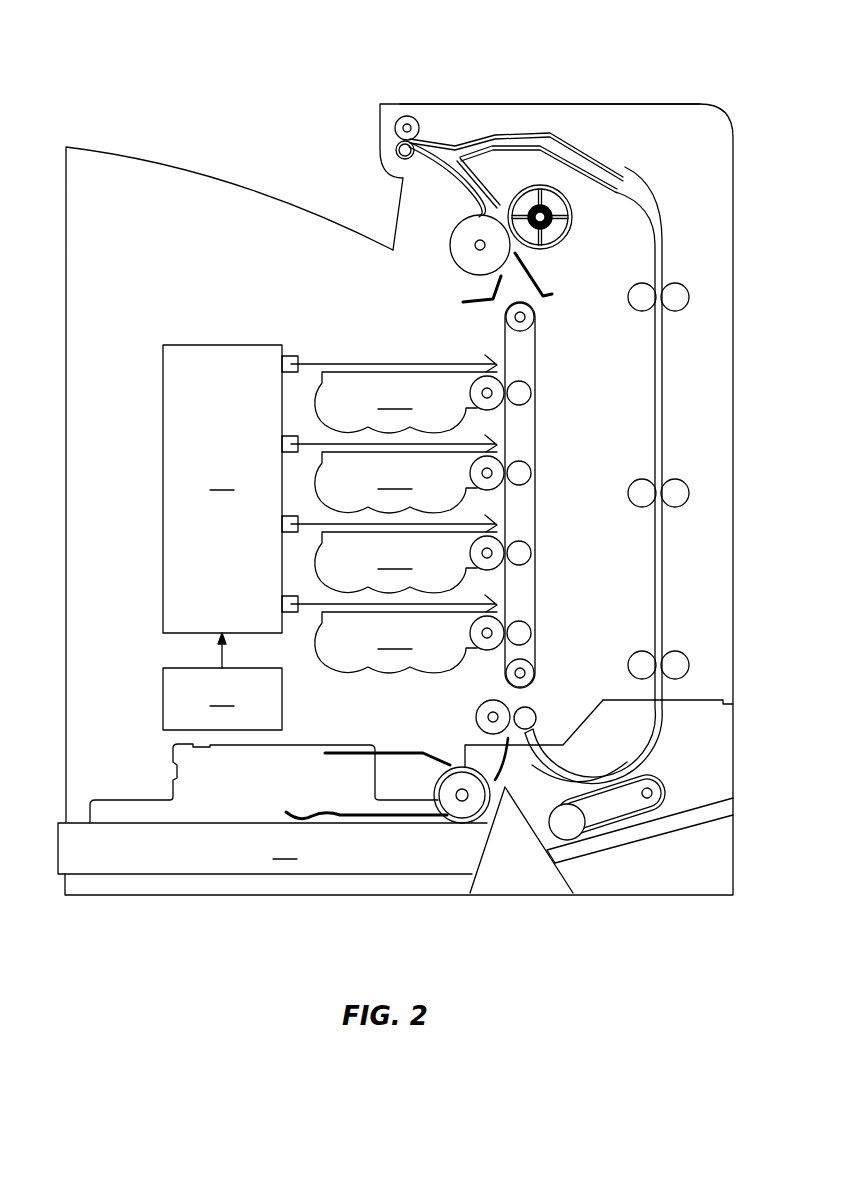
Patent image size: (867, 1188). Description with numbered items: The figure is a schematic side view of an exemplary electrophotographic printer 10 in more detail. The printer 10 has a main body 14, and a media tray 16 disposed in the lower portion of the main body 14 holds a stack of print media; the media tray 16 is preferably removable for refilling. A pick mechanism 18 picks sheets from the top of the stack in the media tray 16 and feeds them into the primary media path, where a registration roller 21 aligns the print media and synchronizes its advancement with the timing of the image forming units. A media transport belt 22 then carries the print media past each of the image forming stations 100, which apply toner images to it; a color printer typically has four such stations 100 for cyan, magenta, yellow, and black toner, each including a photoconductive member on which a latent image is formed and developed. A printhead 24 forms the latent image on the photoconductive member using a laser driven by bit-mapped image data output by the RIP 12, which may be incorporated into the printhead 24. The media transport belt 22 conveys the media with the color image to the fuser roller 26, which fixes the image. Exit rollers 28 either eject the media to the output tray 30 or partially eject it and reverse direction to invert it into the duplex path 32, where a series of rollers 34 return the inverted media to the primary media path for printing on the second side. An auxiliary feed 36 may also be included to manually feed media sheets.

The printer 10 is at (580, 78).
The main body 14 is at (637, 105).
The output tray 30 is at (190, 173).
The exit rollers 28 is at (417, 126).
The fuser roller 26 is at (468, 214).
The media transport belt 22 is at (538, 612).
The image forming stations 100 is at (406, 514).
The printhead 24 is at (222, 489).
The RIP 12 is at (222, 681).
The media tray 16 is at (272, 809).
The pick mechanism 18 is at (437, 783).
The registration roller 21 is at (510, 707).
The duplex path 32 is at (662, 578).
The rollers 34 is at (682, 283).
The auxiliary feed 36 is at (687, 785).